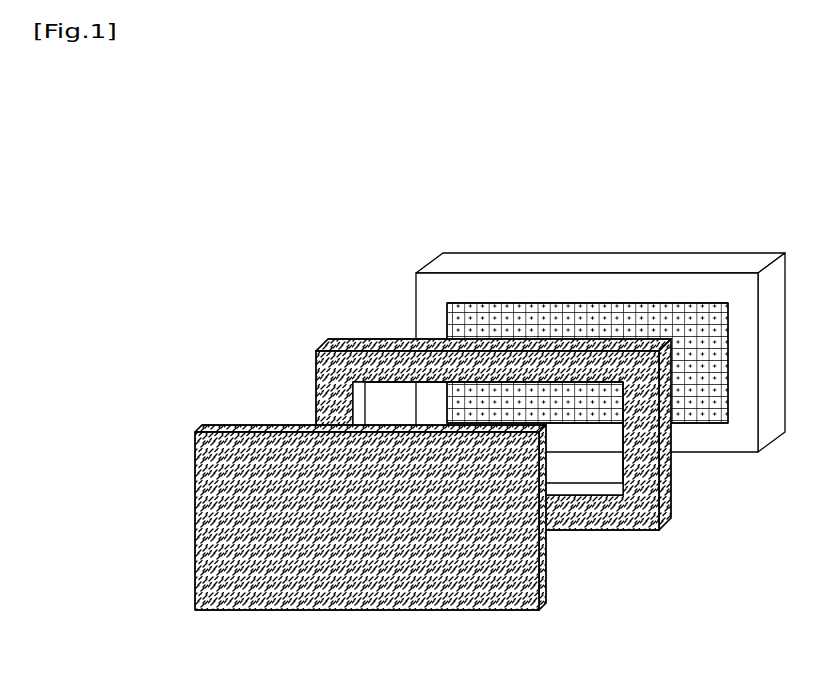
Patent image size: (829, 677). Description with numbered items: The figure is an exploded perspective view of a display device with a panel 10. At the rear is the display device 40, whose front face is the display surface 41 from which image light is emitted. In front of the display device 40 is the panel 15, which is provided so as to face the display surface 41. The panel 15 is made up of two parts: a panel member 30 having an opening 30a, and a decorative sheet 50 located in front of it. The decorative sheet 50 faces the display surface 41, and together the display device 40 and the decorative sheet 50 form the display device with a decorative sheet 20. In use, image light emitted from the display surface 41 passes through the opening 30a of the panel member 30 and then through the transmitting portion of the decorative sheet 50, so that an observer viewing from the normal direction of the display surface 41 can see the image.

The display device with a panel 10 is at (383, 156).
The panel 15 is at (195, 282).
The display device with a decorative sheet 20 is at (280, 178).
The panel member 30 is at (484, 426).
The opening 30a is at (575, 467).
The display device 40 is at (534, 307).
The display surface 41 is at (567, 323).
The decorative sheet 50 is at (272, 463).